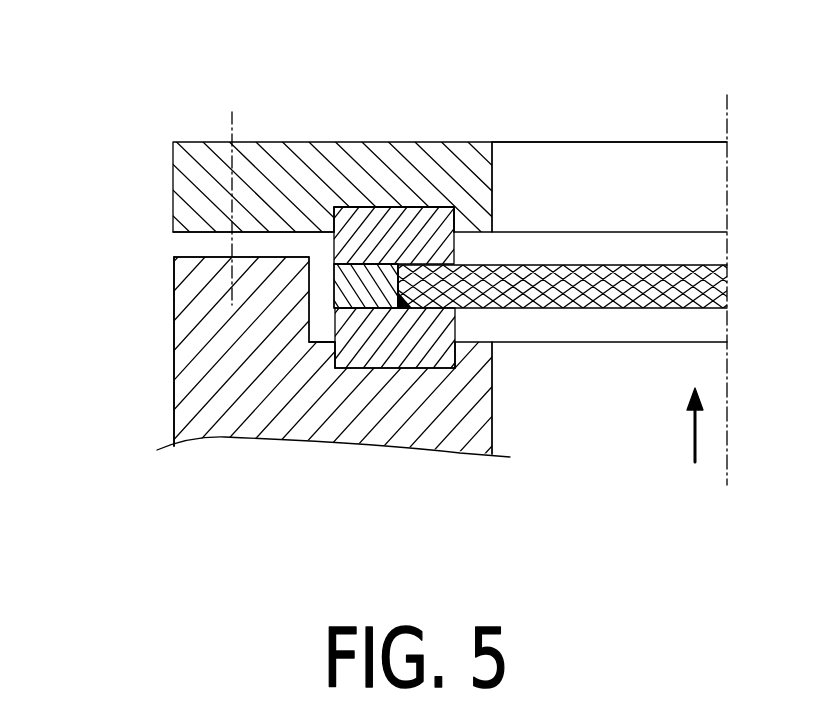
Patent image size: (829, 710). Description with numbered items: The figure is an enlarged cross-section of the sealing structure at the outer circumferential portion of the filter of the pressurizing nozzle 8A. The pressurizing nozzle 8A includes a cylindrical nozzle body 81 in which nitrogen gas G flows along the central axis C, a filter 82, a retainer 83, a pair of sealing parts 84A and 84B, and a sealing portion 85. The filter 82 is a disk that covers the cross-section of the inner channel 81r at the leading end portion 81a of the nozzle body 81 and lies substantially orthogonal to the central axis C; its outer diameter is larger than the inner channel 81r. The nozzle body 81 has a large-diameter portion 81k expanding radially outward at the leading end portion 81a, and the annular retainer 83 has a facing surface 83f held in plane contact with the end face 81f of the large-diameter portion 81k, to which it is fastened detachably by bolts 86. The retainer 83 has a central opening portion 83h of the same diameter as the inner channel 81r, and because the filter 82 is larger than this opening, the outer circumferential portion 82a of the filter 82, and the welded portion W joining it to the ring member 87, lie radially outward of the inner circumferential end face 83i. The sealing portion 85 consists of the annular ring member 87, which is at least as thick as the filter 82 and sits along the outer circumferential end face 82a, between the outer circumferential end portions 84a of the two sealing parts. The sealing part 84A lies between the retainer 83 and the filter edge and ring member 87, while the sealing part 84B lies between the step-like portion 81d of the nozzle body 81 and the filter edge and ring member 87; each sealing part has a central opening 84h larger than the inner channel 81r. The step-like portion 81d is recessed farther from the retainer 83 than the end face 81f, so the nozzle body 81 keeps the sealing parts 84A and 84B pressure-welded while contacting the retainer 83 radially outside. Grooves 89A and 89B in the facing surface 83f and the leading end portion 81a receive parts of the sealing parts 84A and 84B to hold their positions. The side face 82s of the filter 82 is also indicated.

The retainer 83 is at (417, 140).
The facing surface 83f is at (262, 237).
The opening portion 83h is at (507, 140).
The inner circumferential end face 83i is at (492, 186).
The groove 89A is at (400, 213).
The sealing part 84A is at (456, 242).
The outer circumferential end portion 84a is at (338, 208).
The opening 84h is at (458, 232).
The sealing portion 85 is at (333, 290).
The ring member 87 is at (366, 286).
The filter 82 is at (642, 310).
The side surface of wafer 82s is at (397, 285).
The outer circumferential portion 82a is at (402, 304).
The welded portion W is at (405, 310).
The sealing part 84B is at (457, 322).
The nozzle body 81 is at (173, 375).
The leading end portion 81a is at (172, 268).
The end face 81f is at (193, 256).
The step-like portion 81d is at (328, 342).
The large-diameter portion 81k is at (173, 408).
The inner channel 81r is at (492, 408).
The groove 89B is at (352, 368).
The pressurizing nozzle 8A is at (158, 355).
The bolt 86 is at (230, 115).
The central axis C is at (733, 188).
The nitrogen gas G is at (692, 440).